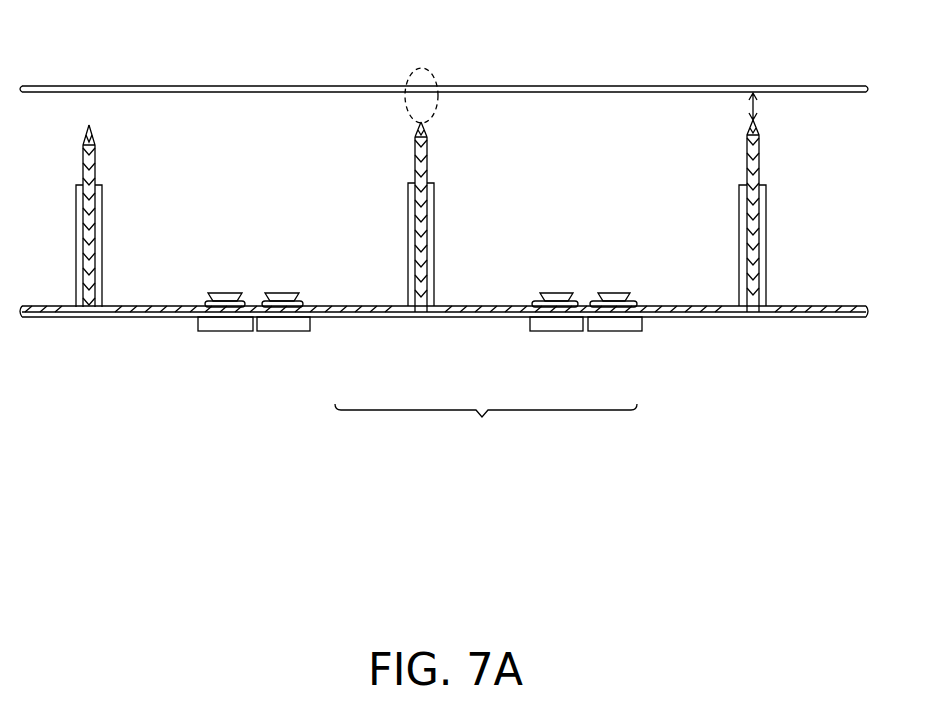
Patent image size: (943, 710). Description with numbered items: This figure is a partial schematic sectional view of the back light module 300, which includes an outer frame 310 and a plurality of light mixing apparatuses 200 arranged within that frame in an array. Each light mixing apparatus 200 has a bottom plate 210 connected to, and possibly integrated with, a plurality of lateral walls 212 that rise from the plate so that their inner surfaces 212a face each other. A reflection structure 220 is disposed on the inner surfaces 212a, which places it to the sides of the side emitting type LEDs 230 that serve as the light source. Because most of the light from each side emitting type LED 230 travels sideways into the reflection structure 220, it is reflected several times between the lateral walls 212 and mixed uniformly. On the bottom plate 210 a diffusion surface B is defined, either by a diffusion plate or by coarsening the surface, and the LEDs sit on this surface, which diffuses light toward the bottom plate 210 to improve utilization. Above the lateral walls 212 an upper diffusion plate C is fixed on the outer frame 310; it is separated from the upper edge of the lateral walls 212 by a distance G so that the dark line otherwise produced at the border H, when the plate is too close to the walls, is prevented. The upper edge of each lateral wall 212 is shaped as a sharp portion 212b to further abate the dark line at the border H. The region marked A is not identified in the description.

The light mixing apparatus 200 is at (486, 428).
The bottom plate 210 is at (462, 312).
The lateral wall 212 is at (412, 293).
The inner surface 212a is at (743, 251).
The sharp portion 212b is at (439, 154).
The reflection structure 220 is at (430, 287).
The side emitting type LED 230 is at (613, 323).
The back light module 300 is at (840, 467).
The outer frame 310 is at (802, 318).
The border H is at (407, 81).
The upper diffusion plate C is at (633, 86).
The region A is at (735, 157).
The diffusion surface B is at (529, 295).
The distance G is at (757, 108).